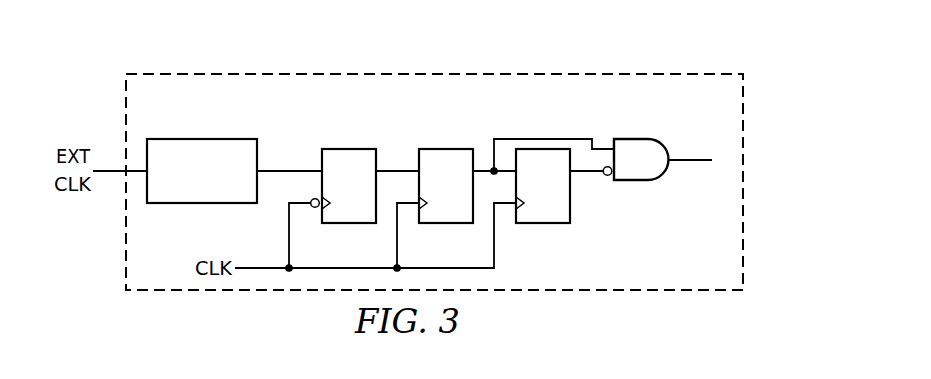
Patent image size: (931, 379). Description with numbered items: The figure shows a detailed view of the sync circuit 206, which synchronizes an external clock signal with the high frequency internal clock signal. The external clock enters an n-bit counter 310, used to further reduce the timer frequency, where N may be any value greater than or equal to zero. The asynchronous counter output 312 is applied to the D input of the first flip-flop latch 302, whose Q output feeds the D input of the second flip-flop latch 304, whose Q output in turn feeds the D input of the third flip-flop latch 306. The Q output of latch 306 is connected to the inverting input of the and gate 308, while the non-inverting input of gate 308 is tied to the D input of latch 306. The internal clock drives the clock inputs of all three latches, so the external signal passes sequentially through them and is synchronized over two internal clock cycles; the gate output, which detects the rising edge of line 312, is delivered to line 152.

The sync circuit 206 is at (312, 74).
The n-bit counter 310 is at (207, 137).
The asynchronous counter output 312 is at (282, 168).
The first flip-flop latch 302 is at (358, 148).
The second flip-flop latch 304 is at (457, 148).
The third flip-flop latch 306 is at (552, 225).
The and gate 308 is at (640, 136).
The output line 152 is at (692, 157).